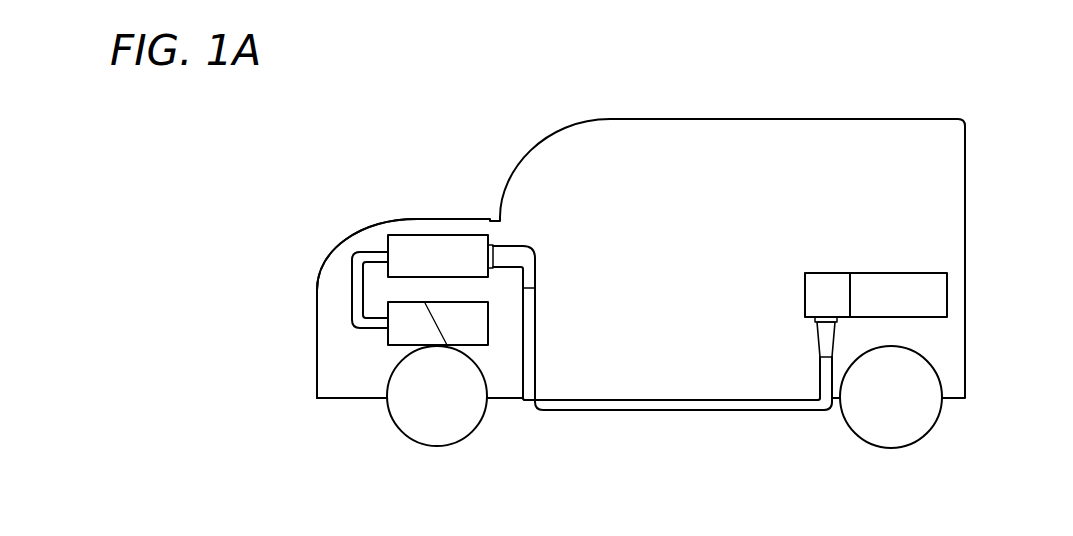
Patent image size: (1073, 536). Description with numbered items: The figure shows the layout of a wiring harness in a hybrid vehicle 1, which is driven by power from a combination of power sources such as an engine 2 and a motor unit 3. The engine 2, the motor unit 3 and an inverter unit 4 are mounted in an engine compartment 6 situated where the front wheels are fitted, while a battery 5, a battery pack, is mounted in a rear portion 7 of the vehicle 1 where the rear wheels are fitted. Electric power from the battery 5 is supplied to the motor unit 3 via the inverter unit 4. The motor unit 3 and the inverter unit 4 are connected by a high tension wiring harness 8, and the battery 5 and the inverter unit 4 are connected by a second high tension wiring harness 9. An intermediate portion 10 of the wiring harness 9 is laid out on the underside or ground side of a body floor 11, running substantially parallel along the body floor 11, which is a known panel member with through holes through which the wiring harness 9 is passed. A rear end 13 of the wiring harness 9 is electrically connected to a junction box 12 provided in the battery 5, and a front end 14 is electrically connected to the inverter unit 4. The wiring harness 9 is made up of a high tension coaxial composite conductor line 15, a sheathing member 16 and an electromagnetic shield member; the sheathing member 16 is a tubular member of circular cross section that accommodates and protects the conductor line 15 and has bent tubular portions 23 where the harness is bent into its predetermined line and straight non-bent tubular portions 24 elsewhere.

The hybrid vehicle 1 is at (333, 133).
The engine 2 is at (477, 332).
The motor unit 3 is at (398, 338).
The inverter unit 4 is at (418, 243).
The battery 5 is at (882, 286).
The engine compartment 6 is at (328, 357).
The rear portion 7 is at (955, 383).
The high tension wiring harness 8 is at (356, 267).
The high tension wiring harness 9 is at (682, 416).
The intermediate portion 10 is at (608, 412).
The body floor 11 is at (641, 398).
The junction box 12 is at (816, 283).
The rear end 13 is at (815, 323).
The front end 14 is at (490, 218).
The high tension coaxial composite conductor line 15 is at (771, 412).
The sheathing member 16 is at (728, 412).
The bent tubular portion 23 is at (527, 416).
The non-bent tubular portion 24 is at (534, 350).